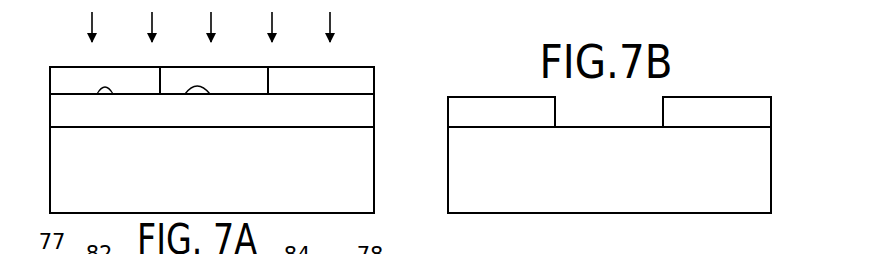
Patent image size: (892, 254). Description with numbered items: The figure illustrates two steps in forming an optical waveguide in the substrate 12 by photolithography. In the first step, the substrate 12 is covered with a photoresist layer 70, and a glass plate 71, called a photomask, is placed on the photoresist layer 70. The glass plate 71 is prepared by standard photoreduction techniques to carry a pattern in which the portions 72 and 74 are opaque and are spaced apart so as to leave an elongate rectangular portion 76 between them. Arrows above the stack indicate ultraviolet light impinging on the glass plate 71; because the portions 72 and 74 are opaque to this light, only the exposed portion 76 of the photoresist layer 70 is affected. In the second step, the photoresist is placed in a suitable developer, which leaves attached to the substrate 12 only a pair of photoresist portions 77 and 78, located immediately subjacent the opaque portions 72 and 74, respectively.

In FIG. 7A, the substrate 12 is at (375, 172).
In FIG. 7B, the substrate 12 is at (771, 185).
In FIG. 7A, the photoresist layer 70 is at (113, 94).
In FIG. 7A, the glass plate 71 is at (375, 88).
In FIG. 7A, the opaque portion 72 is at (78, 67).
In FIG. 7A, the opaque portion 74 is at (353, 67).
In FIG. 7A, the exposed portion 76 is at (210, 94).
In FIG. 7B, the photoresist portion 77 is at (510, 97).
In FIG. 7B, the photoresist portion 78 is at (728, 97).